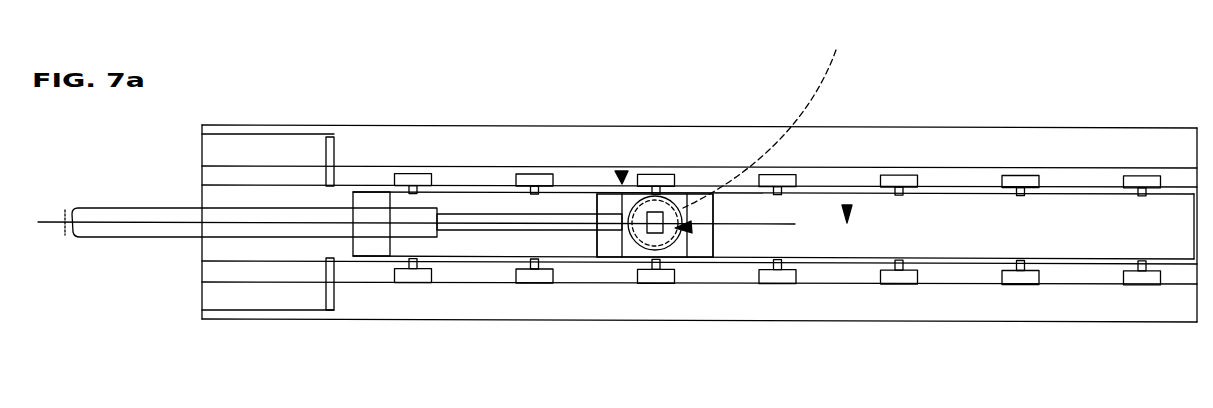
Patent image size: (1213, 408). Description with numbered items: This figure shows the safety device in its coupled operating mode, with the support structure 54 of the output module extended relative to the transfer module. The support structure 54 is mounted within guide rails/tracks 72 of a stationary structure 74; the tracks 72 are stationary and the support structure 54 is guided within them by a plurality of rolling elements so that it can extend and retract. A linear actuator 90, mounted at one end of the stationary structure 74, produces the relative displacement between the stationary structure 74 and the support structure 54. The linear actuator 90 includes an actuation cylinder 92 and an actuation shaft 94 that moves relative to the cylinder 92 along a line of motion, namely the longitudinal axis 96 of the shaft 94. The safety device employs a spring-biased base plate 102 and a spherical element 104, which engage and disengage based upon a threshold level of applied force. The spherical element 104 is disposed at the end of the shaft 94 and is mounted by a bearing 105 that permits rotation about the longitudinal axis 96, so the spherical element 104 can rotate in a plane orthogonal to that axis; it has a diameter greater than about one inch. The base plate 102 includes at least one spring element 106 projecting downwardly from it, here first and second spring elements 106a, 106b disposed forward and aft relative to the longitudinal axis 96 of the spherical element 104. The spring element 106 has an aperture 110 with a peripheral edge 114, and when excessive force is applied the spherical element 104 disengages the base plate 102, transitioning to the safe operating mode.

The support structure 54 is at (847, 205).
The guide rails/tracks 72 is at (1065, 177).
The stationary structure 74 is at (1133, 148).
The linear actuator 90 is at (621, 172).
The actuation cylinder 92 is at (285, 208).
The actuation shaft 94 is at (478, 215).
The longitudinal axis 96 is at (390, 222).
The spring-biased base plate 102 is at (660, 196).
The spherical element 104 is at (685, 195).
The bearing 105 is at (650, 212).
The spring element 106 is at (763, 357).
The first spring element 106a is at (612, 247).
The second spring element 106b is at (698, 240).
The aperture 110 is at (691, 227).
The peripheral edge 114 is at (769, 114).